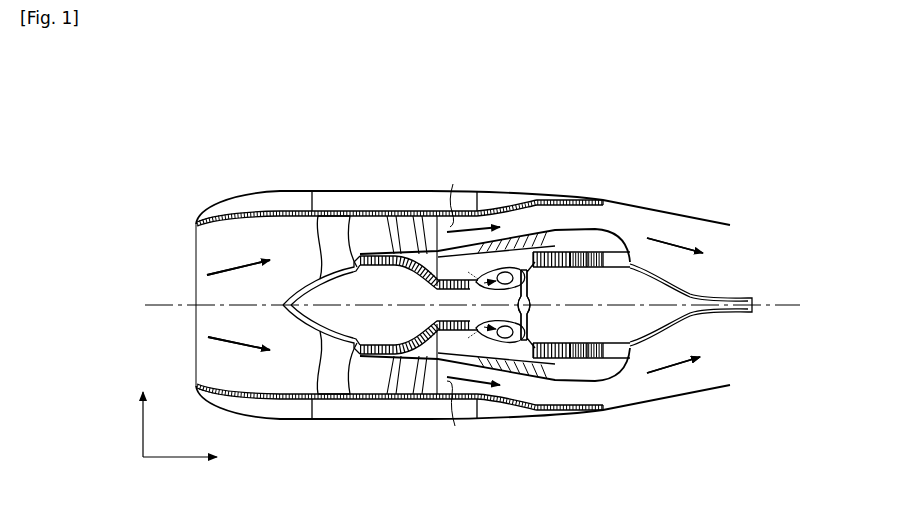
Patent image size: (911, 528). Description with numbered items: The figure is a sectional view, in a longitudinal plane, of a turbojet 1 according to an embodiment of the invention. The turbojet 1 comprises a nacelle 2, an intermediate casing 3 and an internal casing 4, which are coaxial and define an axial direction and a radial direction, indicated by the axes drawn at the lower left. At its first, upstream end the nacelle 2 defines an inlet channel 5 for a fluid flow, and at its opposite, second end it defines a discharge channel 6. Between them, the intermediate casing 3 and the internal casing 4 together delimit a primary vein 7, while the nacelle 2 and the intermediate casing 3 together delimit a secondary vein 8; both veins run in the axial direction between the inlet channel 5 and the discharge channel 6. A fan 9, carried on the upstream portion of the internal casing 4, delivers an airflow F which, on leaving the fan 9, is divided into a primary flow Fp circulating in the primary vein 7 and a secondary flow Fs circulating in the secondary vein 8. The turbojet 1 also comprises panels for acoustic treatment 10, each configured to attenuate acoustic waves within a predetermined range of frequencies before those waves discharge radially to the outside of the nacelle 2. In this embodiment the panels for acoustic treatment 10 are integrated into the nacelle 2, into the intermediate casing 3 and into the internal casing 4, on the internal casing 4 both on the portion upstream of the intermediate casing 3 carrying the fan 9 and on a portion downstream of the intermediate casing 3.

The turbojet 1 is at (600, 113).
The nacelle 2 is at (593, 199).
The intermediate casing 3 is at (514, 232).
The internal casing 4 is at (298, 282).
The inlet channel 5 is at (202, 231).
The discharge channel 6 is at (738, 263).
The primary vein 7 is at (426, 272).
The secondary vein 8 is at (470, 222).
The fan 9 is at (340, 373).
The panel for acoustic treatment 10 is at (309, 236).